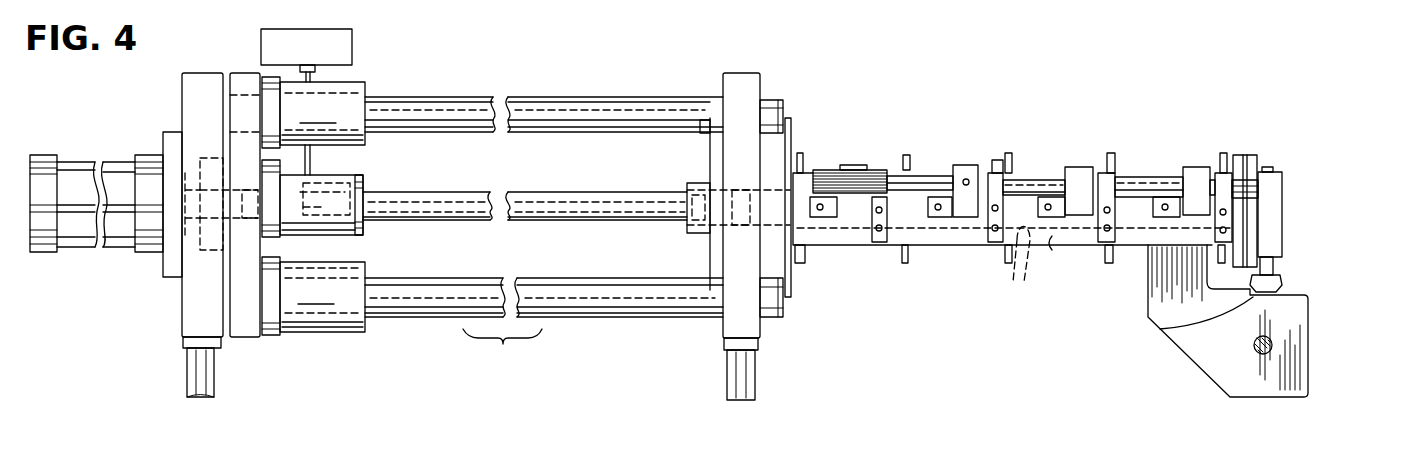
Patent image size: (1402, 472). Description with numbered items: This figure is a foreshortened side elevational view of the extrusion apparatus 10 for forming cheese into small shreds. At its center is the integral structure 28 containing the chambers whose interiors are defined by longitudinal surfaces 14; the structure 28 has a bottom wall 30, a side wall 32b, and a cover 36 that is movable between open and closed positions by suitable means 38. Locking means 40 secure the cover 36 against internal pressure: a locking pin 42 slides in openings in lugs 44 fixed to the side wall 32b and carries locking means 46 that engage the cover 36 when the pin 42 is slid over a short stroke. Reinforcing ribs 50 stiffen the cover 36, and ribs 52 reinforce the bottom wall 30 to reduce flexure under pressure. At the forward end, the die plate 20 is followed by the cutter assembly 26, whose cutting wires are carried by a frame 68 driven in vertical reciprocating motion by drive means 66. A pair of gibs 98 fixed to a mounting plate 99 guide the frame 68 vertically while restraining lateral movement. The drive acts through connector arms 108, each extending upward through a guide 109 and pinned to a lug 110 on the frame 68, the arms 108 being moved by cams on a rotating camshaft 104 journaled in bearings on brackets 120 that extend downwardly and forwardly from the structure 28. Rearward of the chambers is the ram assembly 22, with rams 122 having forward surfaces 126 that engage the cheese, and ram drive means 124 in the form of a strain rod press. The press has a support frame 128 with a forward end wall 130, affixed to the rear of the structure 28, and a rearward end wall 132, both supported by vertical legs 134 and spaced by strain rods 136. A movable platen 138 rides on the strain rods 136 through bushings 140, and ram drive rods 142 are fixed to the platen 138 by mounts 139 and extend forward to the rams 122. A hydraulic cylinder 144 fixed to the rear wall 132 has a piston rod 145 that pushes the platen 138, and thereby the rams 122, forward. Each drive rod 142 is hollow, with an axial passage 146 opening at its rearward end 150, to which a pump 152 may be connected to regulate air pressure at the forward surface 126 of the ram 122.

The extrusion apparatus 10 is at (1307, 271).
The longitudinal surfaces 14 is at (1028, 266).
The die plate 20 is at (1250, 212).
The ram assembly 22 is at (379, 341).
The cutter assembly 26 is at (1168, 353).
The integral structure 28 is at (945, 249).
The bottom wall 30 is at (830, 246).
The side wall 32b is at (1058, 257).
The cover 36 is at (912, 170).
The means for opening and closing the cover 38 is at (997, 159).
The locking means 40 is at (1155, 142).
The locking pin 42 is at (1150, 185).
The lugs 44 is at (879, 243).
The locking means 46 is at (853, 165).
The reinforcing ribs 50 is at (800, 153).
The ribs 52 is at (800, 264).
The means for driving the cutting elements 66 is at (1294, 226).
The frame 68 is at (1265, 170).
The gibs 98 is at (1283, 185).
The mounting plate 99 is at (1240, 160).
The camshaft 104 is at (1275, 343).
The connector arms 108 is at (1282, 285).
The guide 109 is at (1160, 331).
The lug 110 is at (1272, 268).
The brackets 120 is at (1252, 379).
The rams 122 is at (802, 221).
The ram drive means 124 is at (482, 345).
The forward surface 126 is at (795, 247).
The support frame 128 is at (168, 103).
The forward end wall 130 is at (735, 80).
The rearward end wall 132 is at (194, 50).
The vertical legs 134 is at (218, 366).
The strain rods 136 is at (600, 107).
The movable platen 138 is at (240, 327).
The mounts 139 is at (367, 228).
The bushings 140 is at (322, 207).
The ram drive rods 142 is at (420, 197).
The hydraulic cylinder 144 is at (68, 167).
The piston rod 145 is at (215, 244).
The passage 146 is at (535, 200).
The rearward end 150 is at (313, 183).
The pump 152 is at (318, 55).